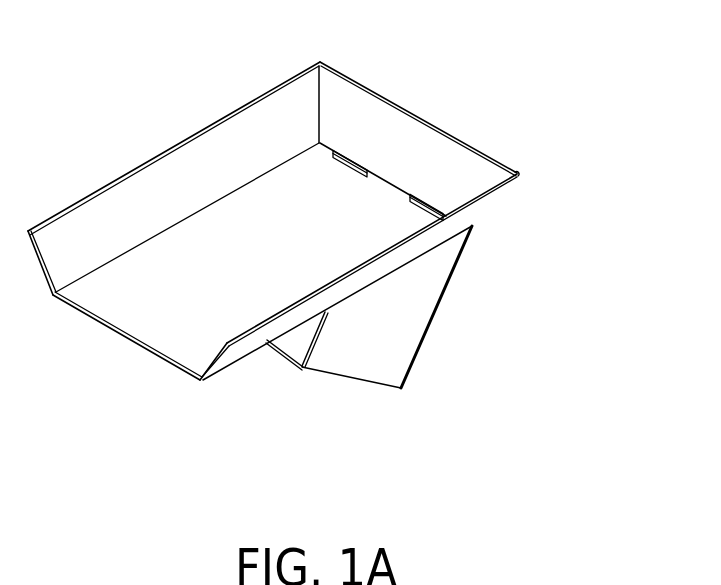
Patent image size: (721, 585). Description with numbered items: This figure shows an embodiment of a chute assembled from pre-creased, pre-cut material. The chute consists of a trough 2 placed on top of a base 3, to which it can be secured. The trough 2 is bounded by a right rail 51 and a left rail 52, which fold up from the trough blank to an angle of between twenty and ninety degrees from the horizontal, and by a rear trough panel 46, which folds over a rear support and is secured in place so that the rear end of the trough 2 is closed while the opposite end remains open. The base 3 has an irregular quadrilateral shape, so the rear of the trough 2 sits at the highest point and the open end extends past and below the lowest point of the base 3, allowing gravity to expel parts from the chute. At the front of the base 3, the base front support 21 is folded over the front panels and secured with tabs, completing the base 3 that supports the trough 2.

The trough 2 is at (215, 240).
The right rail 51 is at (95, 217).
The rear trough panel 46 is at (393, 128).
The left rail 52 is at (482, 204).
The base 3 is at (435, 322).
The base front support 21 is at (295, 343).